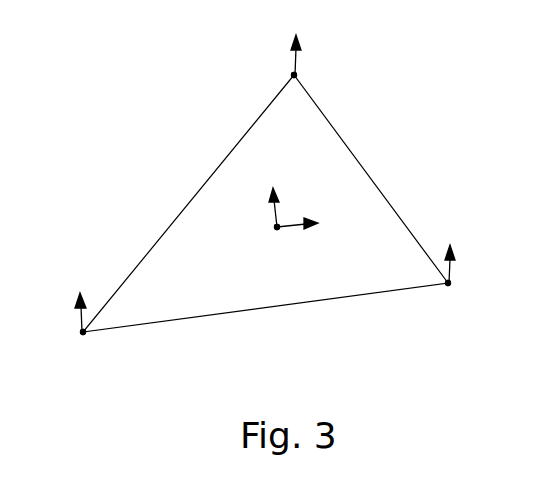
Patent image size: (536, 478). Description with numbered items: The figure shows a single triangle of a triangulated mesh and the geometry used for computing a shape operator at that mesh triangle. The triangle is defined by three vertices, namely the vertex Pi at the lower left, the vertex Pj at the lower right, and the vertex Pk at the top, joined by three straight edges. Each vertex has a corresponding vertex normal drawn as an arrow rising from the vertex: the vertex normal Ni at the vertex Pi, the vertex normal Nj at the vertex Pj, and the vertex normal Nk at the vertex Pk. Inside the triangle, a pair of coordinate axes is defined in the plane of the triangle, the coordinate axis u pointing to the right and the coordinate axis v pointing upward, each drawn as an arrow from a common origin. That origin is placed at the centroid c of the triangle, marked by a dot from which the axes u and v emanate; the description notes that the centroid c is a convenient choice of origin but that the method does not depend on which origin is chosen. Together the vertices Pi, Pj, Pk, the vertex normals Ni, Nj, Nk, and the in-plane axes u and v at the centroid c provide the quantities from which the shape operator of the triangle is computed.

The vertex normal Nk is at (292, 62).
The vertex Pk is at (298, 77).
The vertex normal Ni is at (80, 316).
The vertex Pi is at (83, 338).
The vertex normal Nj is at (453, 262).
The vertex Pj is at (447, 290).
The centroid c is at (274, 229).
The coordinate axis u is at (307, 225).
The coordinate axis v is at (265, 205).